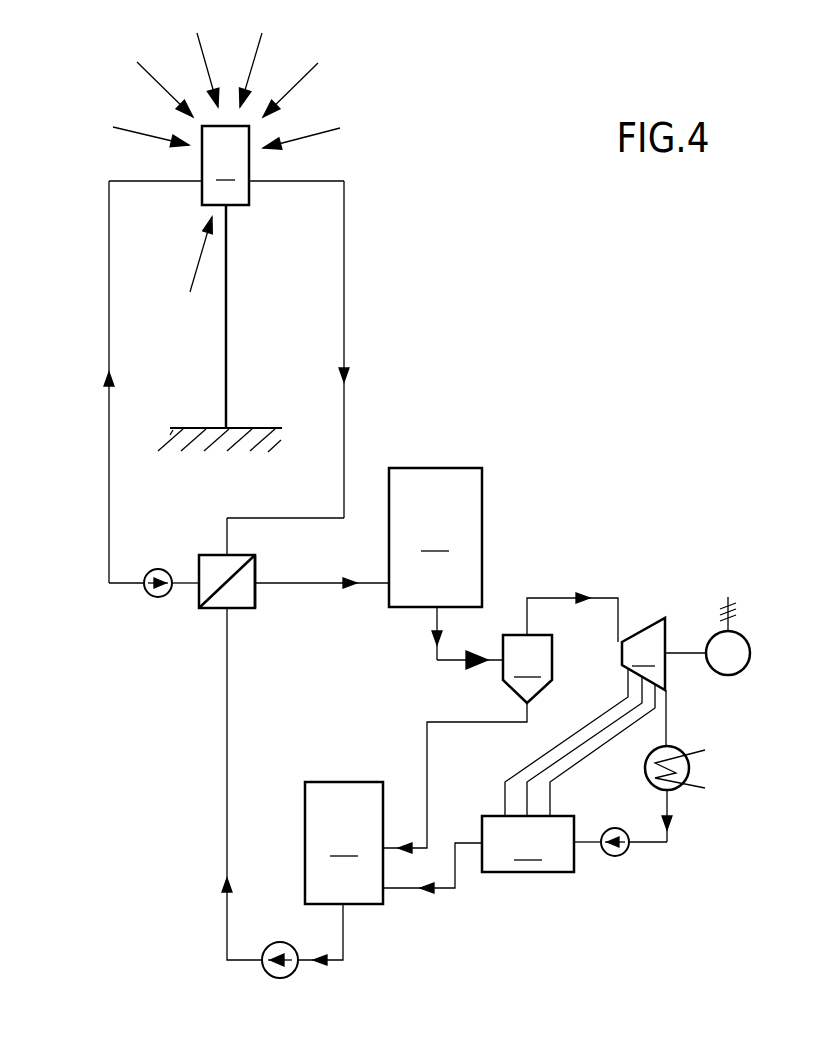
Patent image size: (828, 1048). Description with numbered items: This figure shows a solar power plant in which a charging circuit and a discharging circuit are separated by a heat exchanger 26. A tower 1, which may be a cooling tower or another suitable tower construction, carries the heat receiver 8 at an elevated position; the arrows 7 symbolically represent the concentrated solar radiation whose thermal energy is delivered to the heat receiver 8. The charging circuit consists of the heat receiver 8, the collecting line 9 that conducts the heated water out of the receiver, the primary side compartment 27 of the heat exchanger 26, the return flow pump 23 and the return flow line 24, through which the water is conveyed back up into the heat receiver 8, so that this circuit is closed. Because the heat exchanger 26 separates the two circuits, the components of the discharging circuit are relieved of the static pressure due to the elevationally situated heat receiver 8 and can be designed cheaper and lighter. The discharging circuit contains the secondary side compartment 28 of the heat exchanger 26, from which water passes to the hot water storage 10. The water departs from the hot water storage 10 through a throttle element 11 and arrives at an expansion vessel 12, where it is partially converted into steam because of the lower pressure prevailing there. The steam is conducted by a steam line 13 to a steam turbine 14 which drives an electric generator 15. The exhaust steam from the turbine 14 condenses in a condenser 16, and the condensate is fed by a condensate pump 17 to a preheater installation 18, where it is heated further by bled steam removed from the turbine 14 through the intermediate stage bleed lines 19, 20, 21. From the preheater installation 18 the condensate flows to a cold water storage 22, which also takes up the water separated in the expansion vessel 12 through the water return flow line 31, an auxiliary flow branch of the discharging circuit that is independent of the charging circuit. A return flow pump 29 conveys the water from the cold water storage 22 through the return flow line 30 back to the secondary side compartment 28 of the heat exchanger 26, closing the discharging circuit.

The tower 1 is at (228, 312).
The solar radiation 7 is at (258, 52).
The heat receiver 8 is at (225, 165).
The collecting line 9 is at (346, 328).
The hot water storage 10 is at (435, 537).
The throttle element 11 is at (467, 667).
The expansion vessel 12 is at (527, 669).
The steam line 13 is at (598, 597).
The steam turbine 14 is at (644, 682).
The electric generator 15 is at (747, 638).
The condenser 16 is at (677, 748).
The condensate pump 17 is at (613, 857).
The preheater installation 18 is at (528, 844).
The bleed line 19 is at (563, 740).
The bleed line 20 is at (558, 757).
The bleed line 21 is at (565, 768).
The cold water storage 22 is at (393, 843).
The return flow pump 23 is at (152, 597).
The return flow line 24 is at (108, 452).
The heat exchanger 26 is at (218, 610).
The primary side compartment 27 is at (217, 567).
The secondary side compartment 28 is at (241, 584).
The return flow pump 29 is at (280, 978).
The return flow line 30 is at (225, 807).
The water return flow line 31 is at (426, 743).